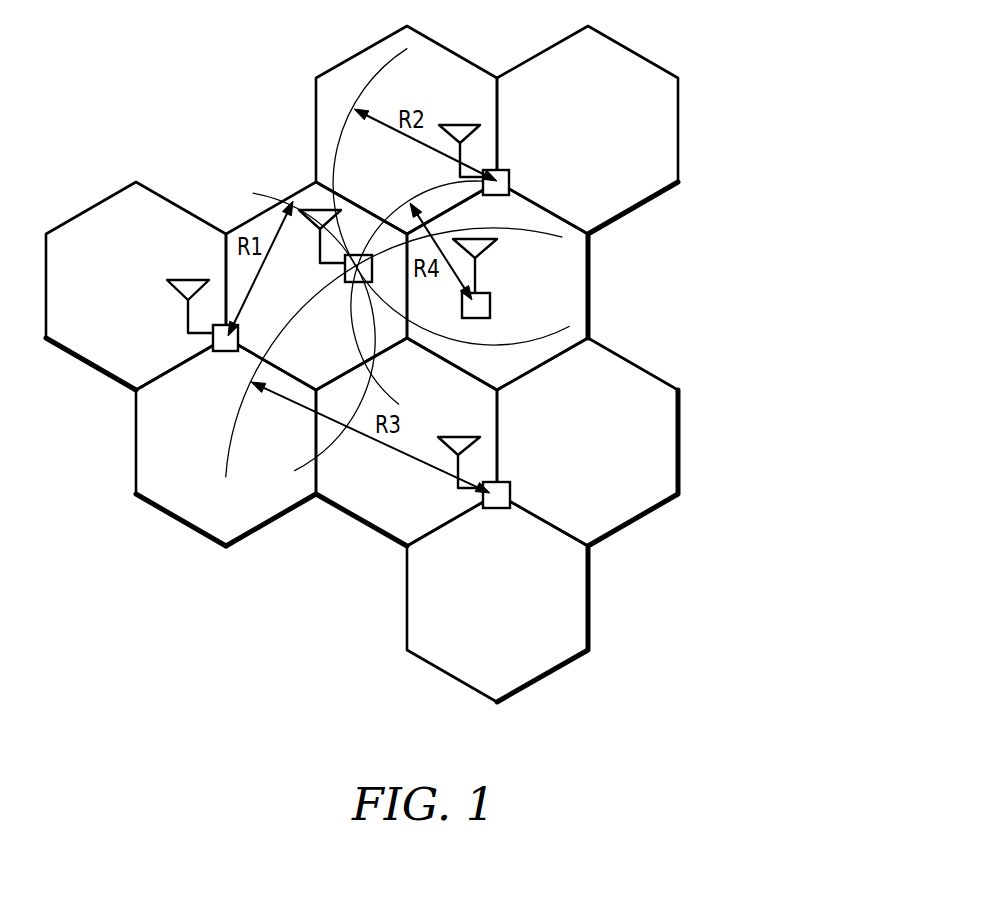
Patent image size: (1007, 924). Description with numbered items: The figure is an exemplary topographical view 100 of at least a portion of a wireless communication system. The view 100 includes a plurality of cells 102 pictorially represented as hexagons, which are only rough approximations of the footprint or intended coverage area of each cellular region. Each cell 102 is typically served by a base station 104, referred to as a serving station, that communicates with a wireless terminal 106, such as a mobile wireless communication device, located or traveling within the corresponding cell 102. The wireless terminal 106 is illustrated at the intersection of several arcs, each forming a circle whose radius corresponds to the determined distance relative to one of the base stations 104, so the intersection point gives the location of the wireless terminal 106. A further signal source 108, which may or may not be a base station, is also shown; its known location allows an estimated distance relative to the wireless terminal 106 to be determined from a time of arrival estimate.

The topographical view 100 is at (753, 63).
The cell 102 is at (667, 160).
The base station 104 is at (510, 184).
The wireless terminal 106 is at (344, 274).
The signal source 108 is at (490, 305).